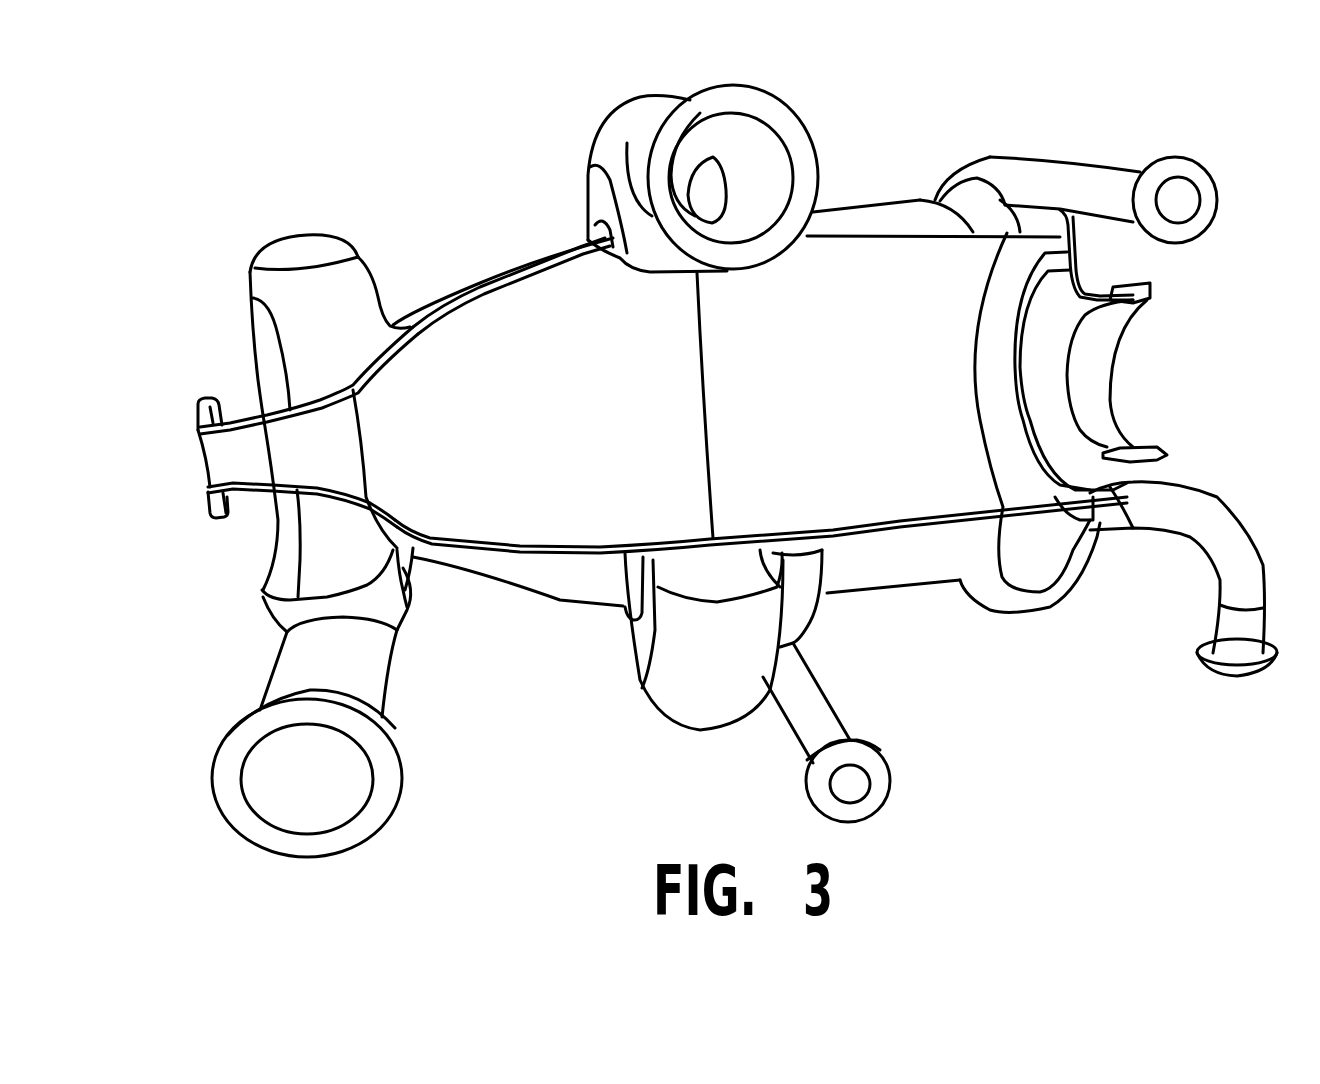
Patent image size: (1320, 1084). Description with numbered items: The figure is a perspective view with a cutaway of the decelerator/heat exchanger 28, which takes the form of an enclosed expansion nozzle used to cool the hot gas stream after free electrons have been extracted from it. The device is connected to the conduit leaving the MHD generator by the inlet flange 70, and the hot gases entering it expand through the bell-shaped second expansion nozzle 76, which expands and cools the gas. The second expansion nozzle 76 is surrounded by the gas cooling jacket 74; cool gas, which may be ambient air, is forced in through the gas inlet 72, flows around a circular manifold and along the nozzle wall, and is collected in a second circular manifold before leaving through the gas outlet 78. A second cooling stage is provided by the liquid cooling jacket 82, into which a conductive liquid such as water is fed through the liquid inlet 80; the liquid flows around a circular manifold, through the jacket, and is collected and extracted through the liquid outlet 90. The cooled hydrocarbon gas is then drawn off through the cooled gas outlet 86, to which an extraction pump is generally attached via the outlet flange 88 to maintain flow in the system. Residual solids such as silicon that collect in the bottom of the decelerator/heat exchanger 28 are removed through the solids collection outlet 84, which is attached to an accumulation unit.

The decelerator/heat exchanger 28 is at (997, 738).
The inlet flange 70 is at (198, 398).
The gas inlet 72 is at (287, 802).
The gas cooling jacket 74 is at (474, 553).
The second expansion nozzle 76 is at (425, 425).
The gas outlet 78 is at (755, 148).
The liquid inlet 80 is at (850, 783).
The liquid cooling jacket 82 is at (888, 533).
The solids collection outlet 84 is at (1220, 580).
The cooled gas outlet 86 is at (1100, 393).
The outlet flange 88 is at (1152, 287).
The liquid outlet 90 is at (1177, 200).